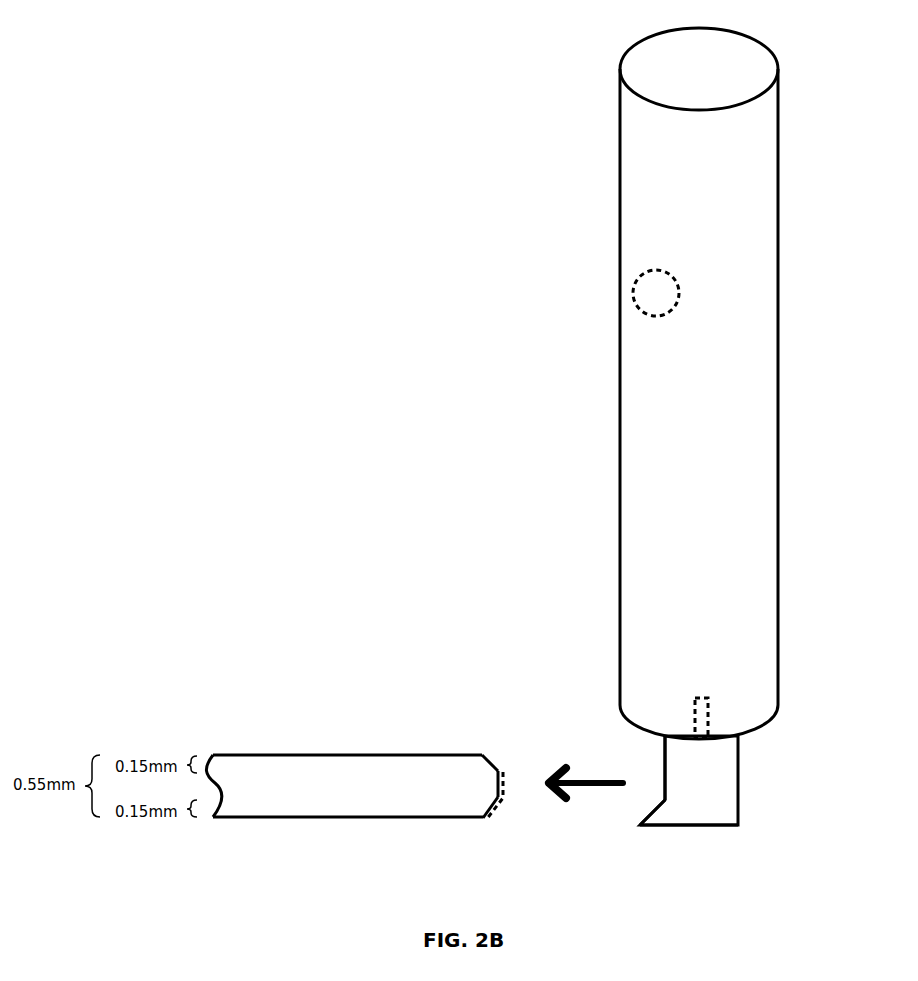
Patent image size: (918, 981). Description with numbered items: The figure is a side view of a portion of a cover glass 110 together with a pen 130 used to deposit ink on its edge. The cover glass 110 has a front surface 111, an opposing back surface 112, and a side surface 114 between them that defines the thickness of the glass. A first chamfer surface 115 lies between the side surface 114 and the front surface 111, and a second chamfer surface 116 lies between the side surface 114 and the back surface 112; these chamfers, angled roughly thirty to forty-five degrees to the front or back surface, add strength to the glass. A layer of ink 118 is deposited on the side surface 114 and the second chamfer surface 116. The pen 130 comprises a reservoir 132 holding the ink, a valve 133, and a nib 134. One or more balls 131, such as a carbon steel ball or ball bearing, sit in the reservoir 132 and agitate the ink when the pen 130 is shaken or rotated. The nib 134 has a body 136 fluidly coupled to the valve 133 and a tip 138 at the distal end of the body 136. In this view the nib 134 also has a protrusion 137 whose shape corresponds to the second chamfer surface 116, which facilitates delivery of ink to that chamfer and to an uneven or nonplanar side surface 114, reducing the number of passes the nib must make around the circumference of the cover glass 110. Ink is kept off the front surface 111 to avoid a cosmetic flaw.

The cover glass 110 is at (387, 766).
The front surface 111 is at (324, 754).
The back surface 112 is at (308, 818).
The side surface 114 is at (498, 783).
The first chamfer surface 115 is at (491, 759).
The second chamfer surface 116 is at (494, 814).
The layer of ink 118 is at (505, 800).
The pen 130 is at (628, 45).
The ball 131 is at (673, 276).
The reservoir 132 is at (780, 396).
The valve 133 is at (697, 698).
The nib 134 is at (738, 783).
The body 136 is at (665, 760).
The protrusion 137 is at (640, 824).
The tip 138 is at (694, 826).